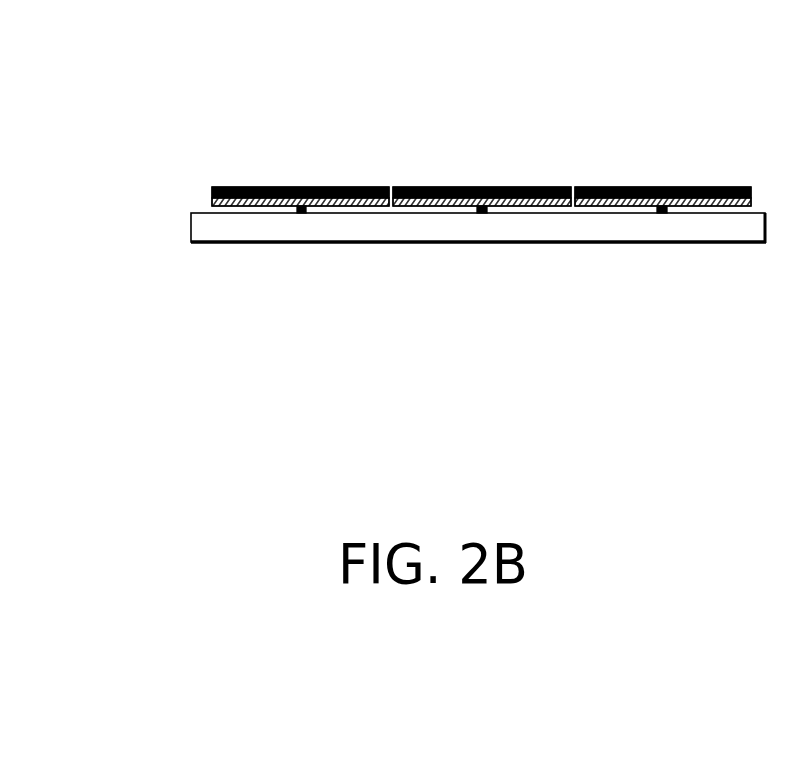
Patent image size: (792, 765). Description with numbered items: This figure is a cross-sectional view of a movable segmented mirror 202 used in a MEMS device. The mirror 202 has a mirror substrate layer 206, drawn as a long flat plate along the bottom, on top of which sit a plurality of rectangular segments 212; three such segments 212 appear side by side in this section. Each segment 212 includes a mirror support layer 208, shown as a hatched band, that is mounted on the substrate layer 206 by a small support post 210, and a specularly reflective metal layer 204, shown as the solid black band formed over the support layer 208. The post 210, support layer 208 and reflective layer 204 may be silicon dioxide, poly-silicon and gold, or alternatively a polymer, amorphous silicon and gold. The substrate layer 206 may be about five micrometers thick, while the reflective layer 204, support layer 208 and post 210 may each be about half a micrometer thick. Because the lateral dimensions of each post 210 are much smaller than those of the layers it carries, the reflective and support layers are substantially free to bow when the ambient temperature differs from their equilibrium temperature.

The segmented mirror 202 is at (279, 379).
The reflective layer 204 is at (250, 186).
The mirror substrate layer 206 is at (208, 232).
The mirror support layer 208 is at (212, 202).
The support post 210 is at (304, 213).
The rectangular segment 212 is at (358, 168).